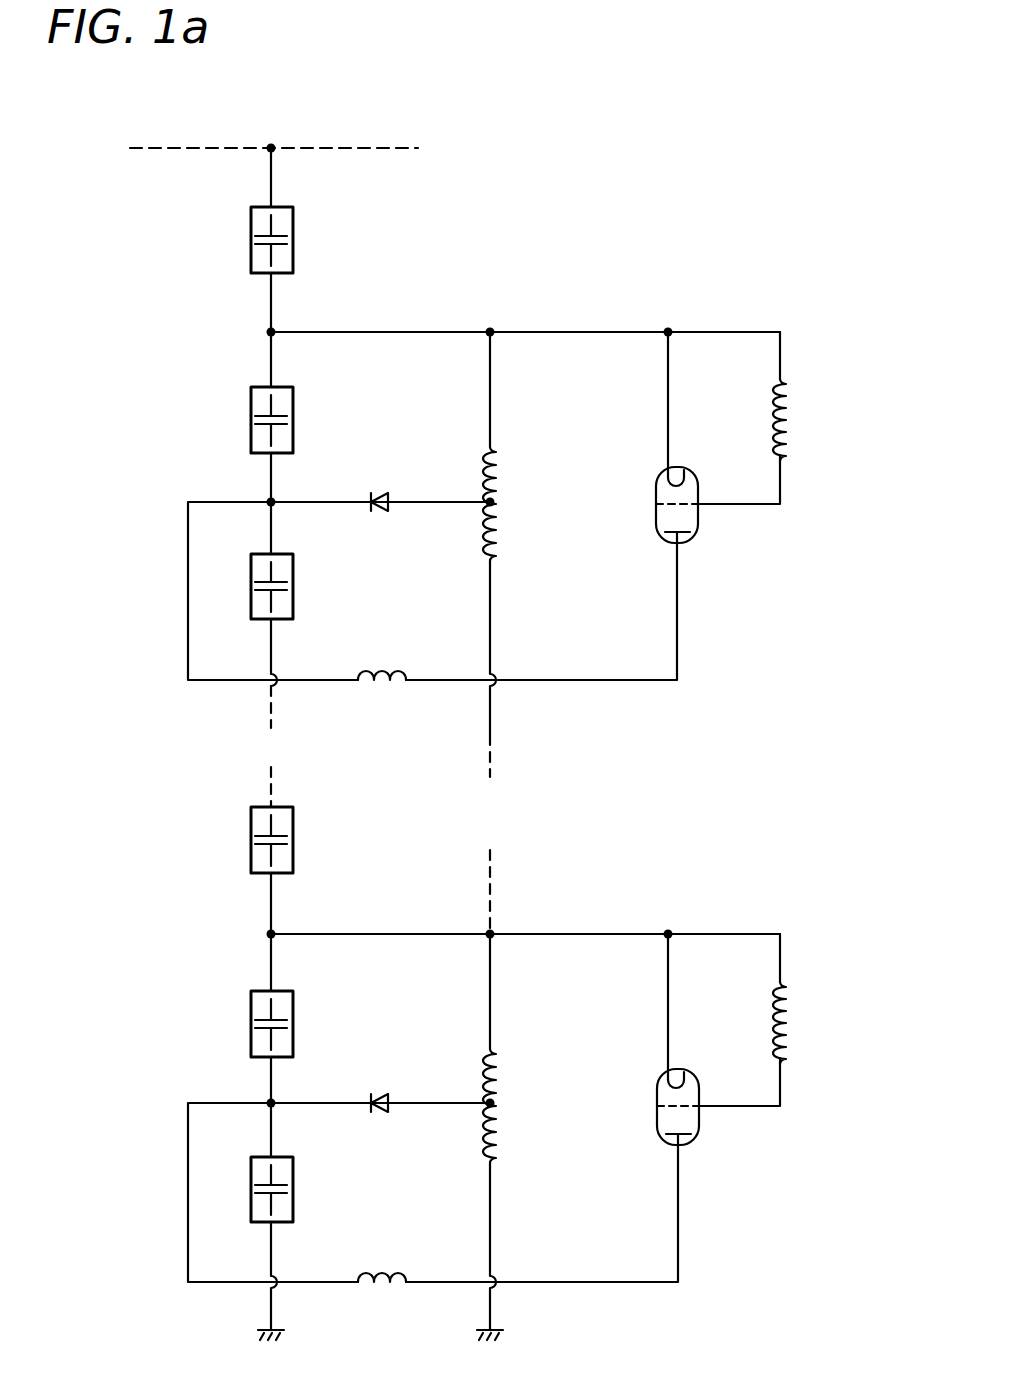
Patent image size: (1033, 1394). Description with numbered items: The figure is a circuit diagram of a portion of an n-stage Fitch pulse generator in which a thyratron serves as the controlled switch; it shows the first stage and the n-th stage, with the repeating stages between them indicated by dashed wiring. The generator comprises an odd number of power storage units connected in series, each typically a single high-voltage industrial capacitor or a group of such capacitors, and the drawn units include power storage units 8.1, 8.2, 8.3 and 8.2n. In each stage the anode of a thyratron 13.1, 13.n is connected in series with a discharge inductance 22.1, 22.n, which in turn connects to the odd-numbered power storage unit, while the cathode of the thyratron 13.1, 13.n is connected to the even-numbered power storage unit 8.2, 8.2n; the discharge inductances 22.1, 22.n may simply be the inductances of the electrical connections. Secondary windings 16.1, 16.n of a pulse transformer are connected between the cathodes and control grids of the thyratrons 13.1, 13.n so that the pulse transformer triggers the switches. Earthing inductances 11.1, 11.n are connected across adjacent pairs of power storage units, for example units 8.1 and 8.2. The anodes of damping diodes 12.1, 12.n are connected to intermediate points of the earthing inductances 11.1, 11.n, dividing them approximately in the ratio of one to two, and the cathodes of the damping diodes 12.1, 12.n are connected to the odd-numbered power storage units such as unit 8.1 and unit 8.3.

The power storage unit 8.2n is at (293, 421).
The power storage unit 8.3 is at (293, 836).
The power storage unit 8.2 is at (293, 1025).
The power storage unit 8.1 is at (293, 1190).
The damping diode 12.n is at (372, 492).
The damping diode 12.1 is at (374, 1093).
The earthing inductance 11.n is at (498, 503).
The earthing inductance 11.1 is at (498, 1104).
The thyratron 13.n is at (699, 524).
The thyratron 13.1 is at (700, 1126).
The secondary winding 16.n is at (788, 418).
The secondary winding 16.1 is at (788, 1020).
The discharge inductance 22.n is at (380, 671).
The discharge inductance 22.1 is at (381, 1274).